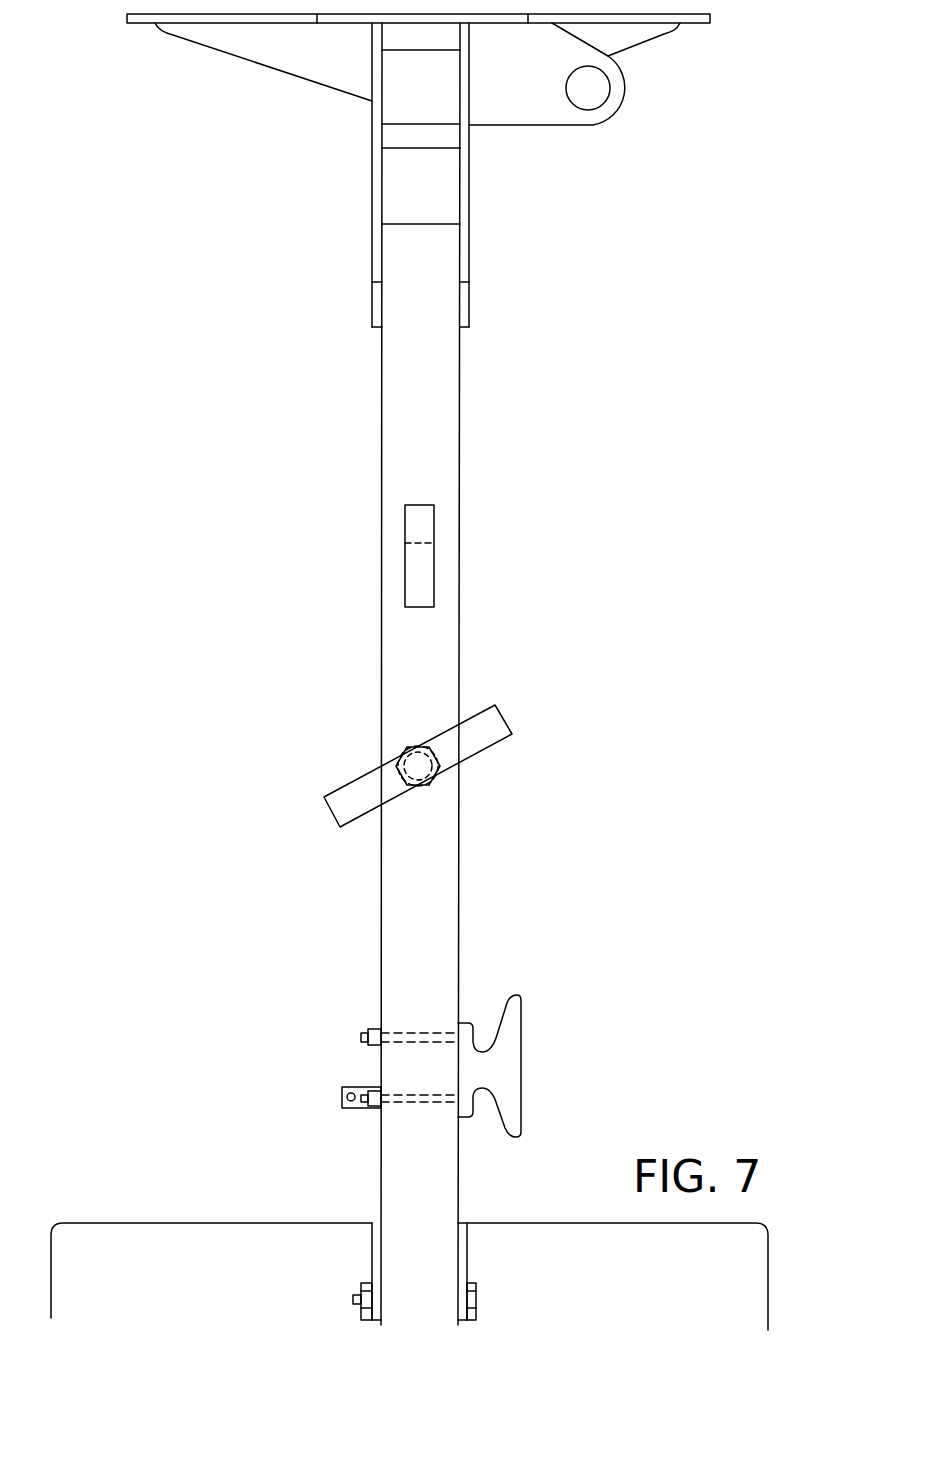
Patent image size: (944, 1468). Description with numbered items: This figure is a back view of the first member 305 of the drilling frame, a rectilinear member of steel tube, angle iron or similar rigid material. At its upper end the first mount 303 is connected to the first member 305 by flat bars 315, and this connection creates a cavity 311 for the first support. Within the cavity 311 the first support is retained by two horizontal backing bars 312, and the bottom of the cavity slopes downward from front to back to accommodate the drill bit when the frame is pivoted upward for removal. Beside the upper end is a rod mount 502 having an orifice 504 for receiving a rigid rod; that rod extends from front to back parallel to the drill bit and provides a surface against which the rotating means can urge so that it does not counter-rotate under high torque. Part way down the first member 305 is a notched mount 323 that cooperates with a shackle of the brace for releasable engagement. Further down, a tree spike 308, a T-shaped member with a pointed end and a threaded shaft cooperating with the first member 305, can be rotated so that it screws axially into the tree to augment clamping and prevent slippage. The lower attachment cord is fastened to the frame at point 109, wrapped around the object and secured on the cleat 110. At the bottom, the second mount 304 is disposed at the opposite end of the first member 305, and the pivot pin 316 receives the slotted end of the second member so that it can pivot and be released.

The first mount 303 is at (703, 27).
The first member 305 is at (450, 868).
The flat bars 315 is at (372, 268).
The horizontal backing bars 312 is at (395, 40).
The cavity 311 is at (398, 199).
The rod mount 502 is at (549, 112).
The orifice 504 is at (600, 92).
The notched mount 323 is at (407, 567).
The tree spike 308 is at (352, 792).
The cleat 110 is at (518, 1058).
The fastening point 109 is at (348, 1110).
The second mount 304 is at (758, 1270).
The pivot pin 316 is at (478, 1298).